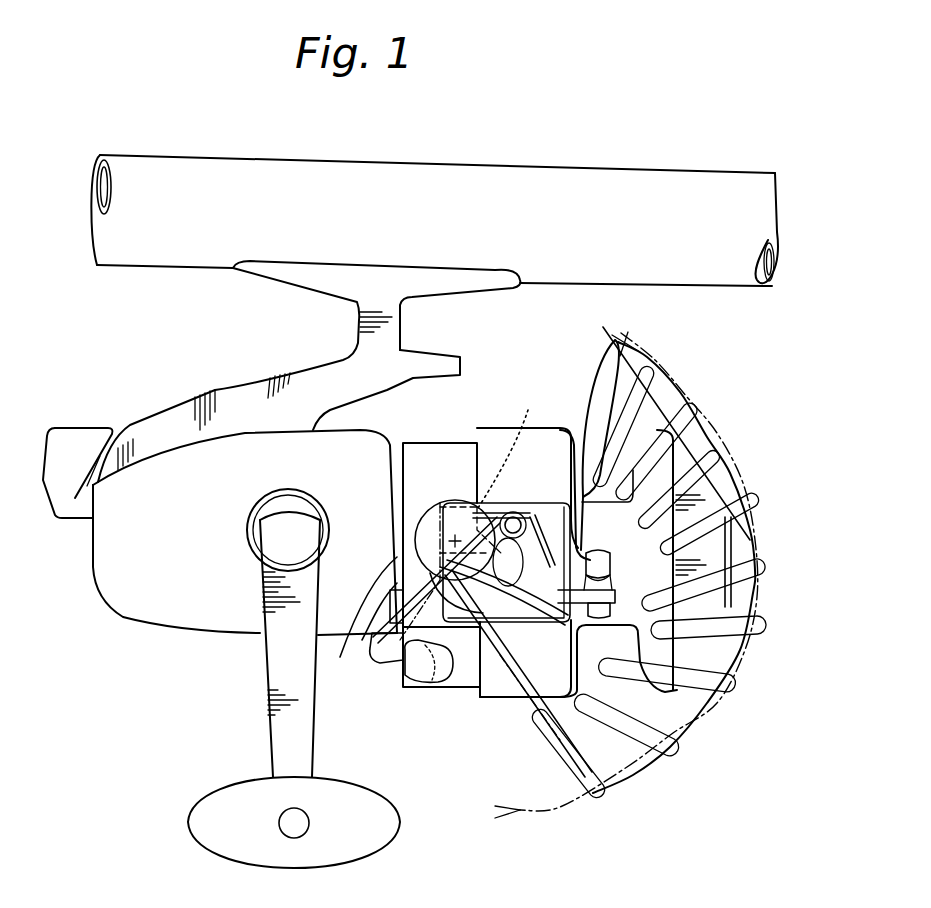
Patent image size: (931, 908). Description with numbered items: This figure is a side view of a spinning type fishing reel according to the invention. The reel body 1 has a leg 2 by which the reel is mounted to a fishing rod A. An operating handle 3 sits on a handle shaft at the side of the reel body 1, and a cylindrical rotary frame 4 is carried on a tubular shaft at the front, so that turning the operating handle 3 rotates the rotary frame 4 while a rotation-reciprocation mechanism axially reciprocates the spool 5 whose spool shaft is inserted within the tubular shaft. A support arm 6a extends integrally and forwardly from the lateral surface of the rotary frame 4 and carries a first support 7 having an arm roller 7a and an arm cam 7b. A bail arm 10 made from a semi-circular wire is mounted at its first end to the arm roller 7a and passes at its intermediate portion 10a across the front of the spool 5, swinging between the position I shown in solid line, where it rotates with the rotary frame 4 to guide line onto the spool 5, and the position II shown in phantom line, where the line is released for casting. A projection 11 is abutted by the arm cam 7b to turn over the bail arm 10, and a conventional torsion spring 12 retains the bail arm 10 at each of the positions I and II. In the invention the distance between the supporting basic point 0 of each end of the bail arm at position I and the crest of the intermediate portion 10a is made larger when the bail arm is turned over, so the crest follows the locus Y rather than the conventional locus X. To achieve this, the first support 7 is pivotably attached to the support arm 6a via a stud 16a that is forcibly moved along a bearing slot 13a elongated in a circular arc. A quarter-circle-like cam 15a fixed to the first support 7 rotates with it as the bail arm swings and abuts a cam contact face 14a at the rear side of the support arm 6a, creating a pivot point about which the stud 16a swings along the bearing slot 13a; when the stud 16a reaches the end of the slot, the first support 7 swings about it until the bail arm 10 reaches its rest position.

The fishing rod A is at (622, 170).
The reel body 1 is at (190, 613).
The leg 2 is at (452, 290).
The operating handle 3 is at (265, 696).
The cylindrical rotary frame 4 is at (437, 443).
The spool 5 is at (555, 412).
The supporting basic point 0 is at (452, 540).
The support arm 6a is at (477, 510).
The first support 7 is at (365, 637).
The arm roller 7a is at (606, 583).
The arm cam 7b is at (525, 612).
The bail arm 10 is at (596, 392).
The intermediate portion 10a is at (626, 344).
The projection 11 is at (462, 359).
The torsion spring 12 is at (520, 515).
The bearing slot 13a is at (504, 505).
The cam contact face 14a is at (440, 682).
The cam 15a is at (460, 610).
The stud 16a is at (443, 520).
The line guiding position I is at (649, 552).
The line releasing position II is at (639, 582).
The conventional locus X is at (498, 797).
The locus Y is at (498, 822).